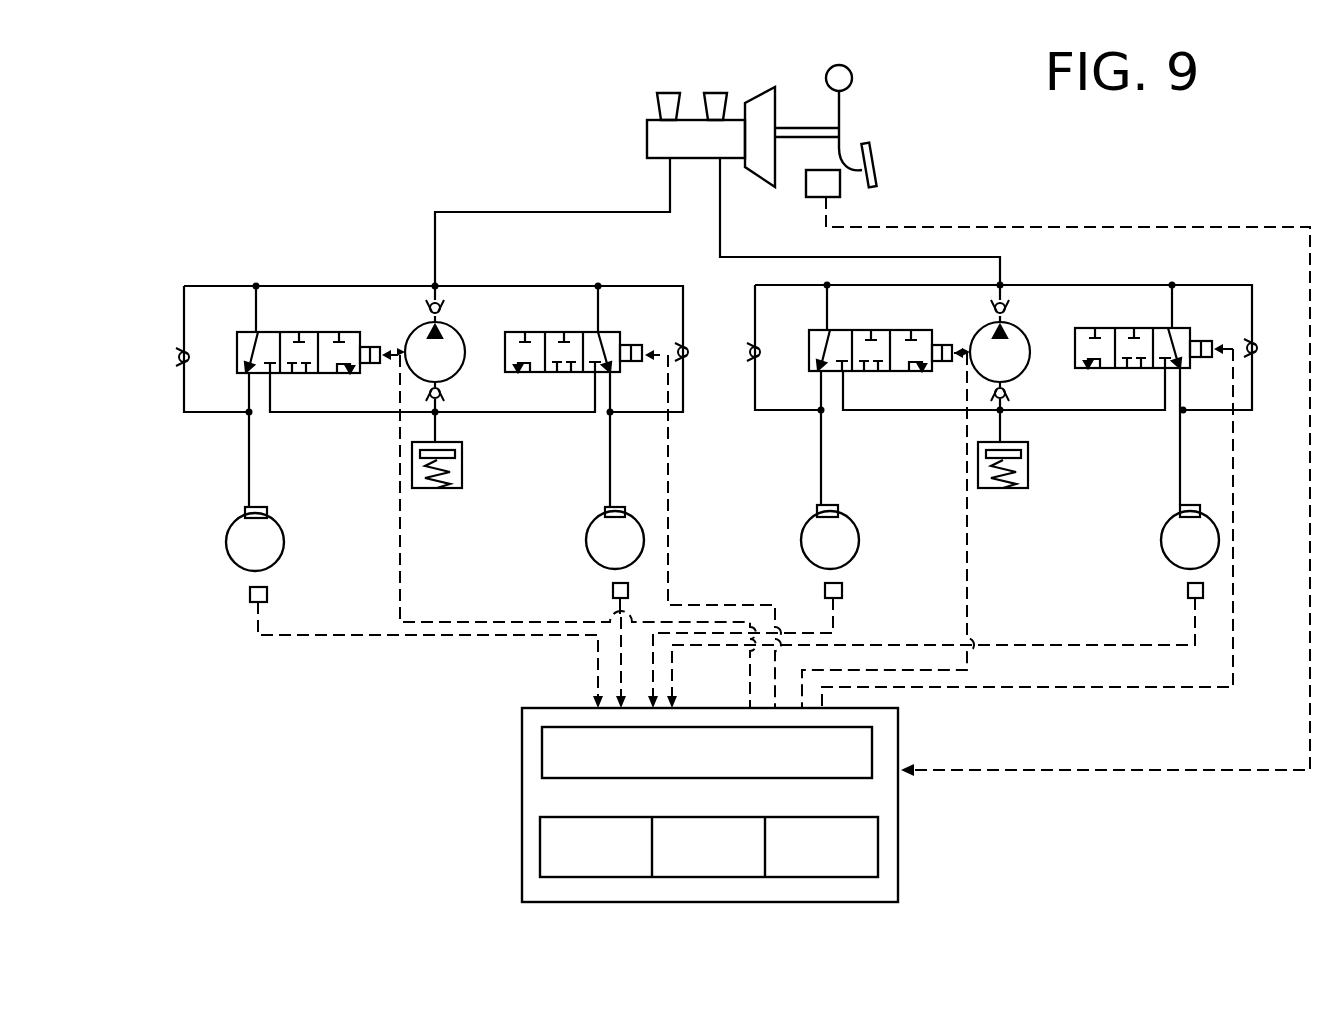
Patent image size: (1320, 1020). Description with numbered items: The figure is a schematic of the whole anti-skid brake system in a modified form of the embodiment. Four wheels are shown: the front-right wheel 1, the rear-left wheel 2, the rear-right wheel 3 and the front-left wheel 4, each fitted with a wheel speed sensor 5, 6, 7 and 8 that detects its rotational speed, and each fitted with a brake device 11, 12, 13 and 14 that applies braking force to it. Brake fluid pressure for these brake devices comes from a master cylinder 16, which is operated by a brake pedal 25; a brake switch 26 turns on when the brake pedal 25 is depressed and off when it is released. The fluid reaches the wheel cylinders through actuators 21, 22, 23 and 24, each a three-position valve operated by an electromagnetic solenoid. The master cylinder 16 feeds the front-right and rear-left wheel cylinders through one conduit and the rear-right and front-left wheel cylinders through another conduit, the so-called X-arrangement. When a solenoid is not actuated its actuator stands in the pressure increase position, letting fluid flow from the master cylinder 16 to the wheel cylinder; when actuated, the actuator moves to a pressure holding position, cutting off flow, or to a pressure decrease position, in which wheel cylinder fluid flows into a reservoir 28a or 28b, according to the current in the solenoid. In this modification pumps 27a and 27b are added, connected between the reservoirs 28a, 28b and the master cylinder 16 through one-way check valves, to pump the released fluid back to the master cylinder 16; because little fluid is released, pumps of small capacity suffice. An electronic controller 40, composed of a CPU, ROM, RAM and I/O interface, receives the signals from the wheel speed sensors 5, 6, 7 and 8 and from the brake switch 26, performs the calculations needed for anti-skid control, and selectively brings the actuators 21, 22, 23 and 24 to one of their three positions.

The front-right wheel 1 is at (226, 540).
The rear-left wheel 2 is at (586, 540).
The rear-right wheel 3 is at (801, 540).
The front-left wheel 4 is at (1161, 540).
The wheel speed sensor 5 is at (270, 596).
The wheel speed sensor 6 is at (613, 590).
The wheel speed sensor 7 is at (843, 592).
The wheel speed sensor 8 is at (1188, 591).
The brake device 11 is at (265, 507).
The brake device 12 is at (625, 507).
The brake device 13 is at (820, 505).
The brake device 14 is at (1182, 505).
The master cylinder 16 is at (647, 133).
The actuator 21 is at (337, 373).
The actuator 22 is at (541, 332).
The actuator 23 is at (878, 330).
The actuator 24 is at (1098, 328).
The brake pedal 25 is at (877, 165).
The brake switch 26 is at (806, 186).
The pump 27a is at (458, 368).
The pump 27b is at (1023, 368).
The reservoir 28a is at (462, 465).
The reservoir 28b is at (1003, 488).
The electronic controller 40 is at (900, 752).